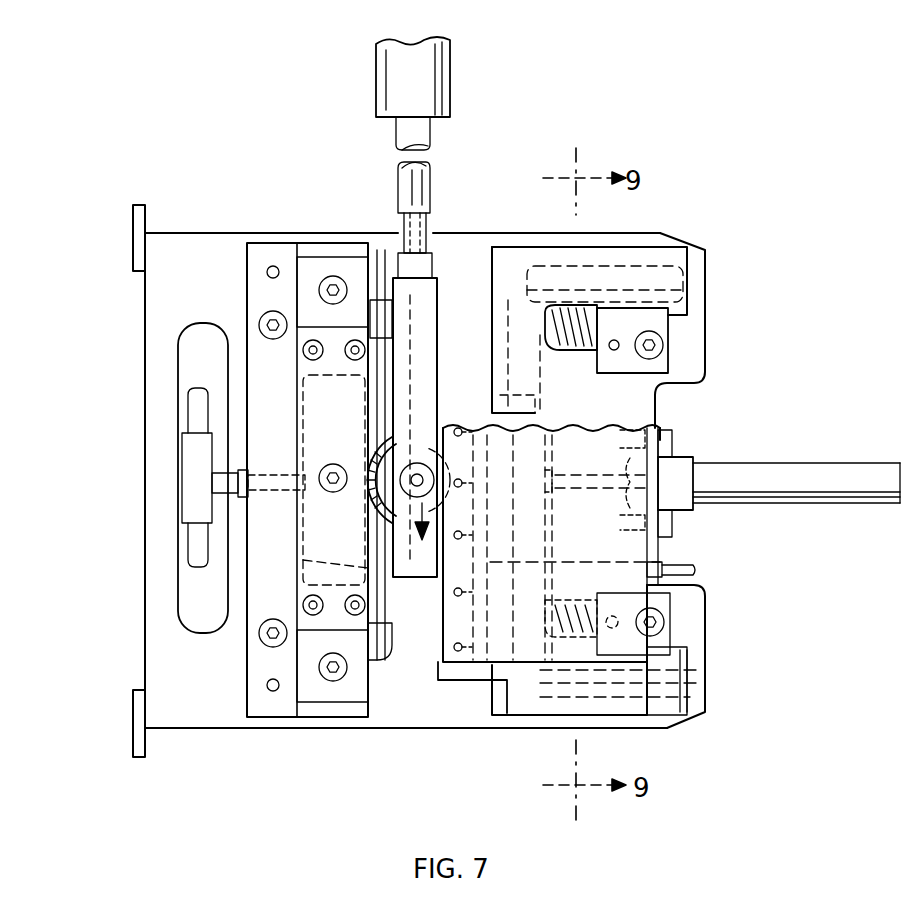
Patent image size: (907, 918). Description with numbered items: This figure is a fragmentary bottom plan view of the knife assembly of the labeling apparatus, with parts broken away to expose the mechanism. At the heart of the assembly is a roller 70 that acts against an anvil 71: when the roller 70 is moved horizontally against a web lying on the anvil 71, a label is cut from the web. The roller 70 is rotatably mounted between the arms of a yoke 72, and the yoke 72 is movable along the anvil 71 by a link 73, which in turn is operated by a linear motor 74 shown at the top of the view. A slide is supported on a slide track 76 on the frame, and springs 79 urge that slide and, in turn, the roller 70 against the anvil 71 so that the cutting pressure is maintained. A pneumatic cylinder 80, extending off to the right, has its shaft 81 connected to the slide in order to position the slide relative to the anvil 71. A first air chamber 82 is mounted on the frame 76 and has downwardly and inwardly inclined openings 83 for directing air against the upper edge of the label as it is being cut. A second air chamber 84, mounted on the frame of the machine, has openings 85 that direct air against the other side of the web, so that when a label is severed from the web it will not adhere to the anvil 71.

The roller 70 is at (403, 437).
The anvil 71 is at (383, 413).
The yoke 72 is at (437, 302).
The link 73 is at (432, 198).
The linear motor 74 is at (393, 72).
The slide track 76 is at (642, 278).
The springs 79 is at (560, 365).
The pneumatic cylinder 80 is at (775, 478).
The shaft 81 is at (567, 485).
The first air chamber 82 is at (523, 667).
The openings 83 is at (457, 652).
The second air chamber 84 is at (297, 590).
The openings 85 is at (303, 560).